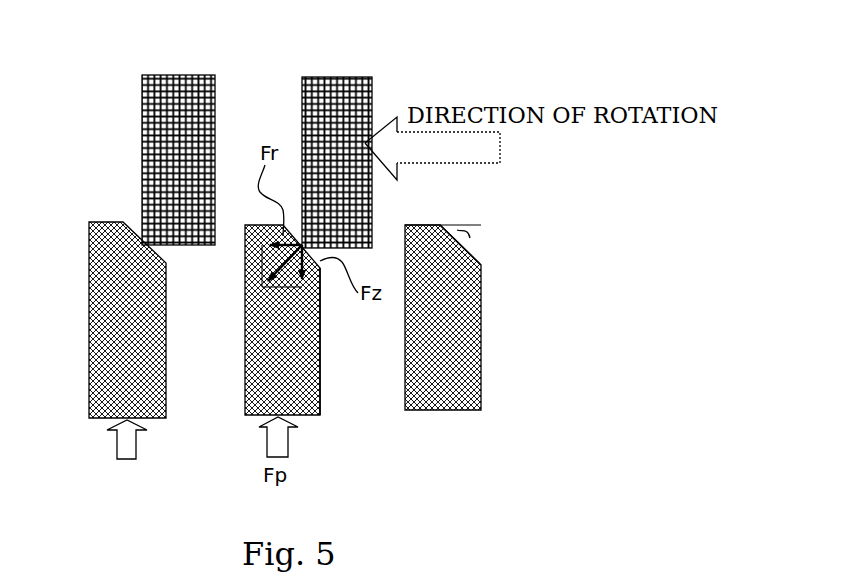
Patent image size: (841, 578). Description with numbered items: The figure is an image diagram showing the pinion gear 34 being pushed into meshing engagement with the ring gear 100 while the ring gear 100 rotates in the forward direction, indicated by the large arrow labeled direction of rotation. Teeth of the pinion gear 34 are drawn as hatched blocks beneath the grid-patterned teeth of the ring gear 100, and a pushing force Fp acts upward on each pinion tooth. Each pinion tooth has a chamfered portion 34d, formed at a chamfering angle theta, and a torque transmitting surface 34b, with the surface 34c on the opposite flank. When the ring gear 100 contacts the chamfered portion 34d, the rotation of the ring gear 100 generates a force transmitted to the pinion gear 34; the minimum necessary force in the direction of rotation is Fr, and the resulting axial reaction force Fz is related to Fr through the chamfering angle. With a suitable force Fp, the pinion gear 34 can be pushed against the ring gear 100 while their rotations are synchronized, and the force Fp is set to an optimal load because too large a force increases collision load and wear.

The ring gear 100 is at (330, 77).
The pinion gear 34 is at (275, 355).
The torque transmitting surface 34b is at (403, 390).
The side surface 34c is at (325, 403).
The chamfered portion 34d is at (480, 260).